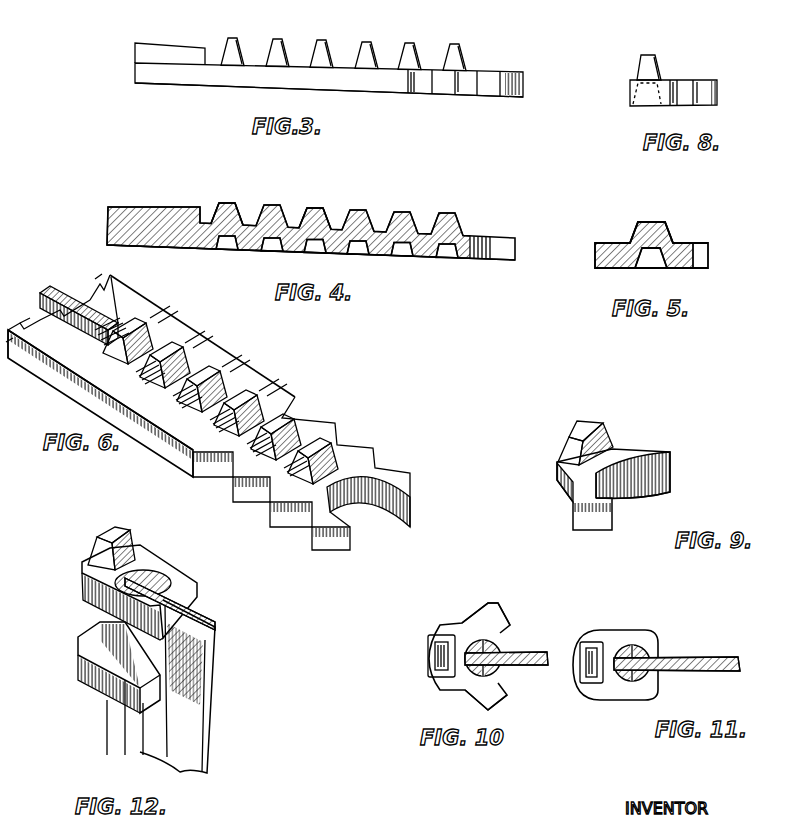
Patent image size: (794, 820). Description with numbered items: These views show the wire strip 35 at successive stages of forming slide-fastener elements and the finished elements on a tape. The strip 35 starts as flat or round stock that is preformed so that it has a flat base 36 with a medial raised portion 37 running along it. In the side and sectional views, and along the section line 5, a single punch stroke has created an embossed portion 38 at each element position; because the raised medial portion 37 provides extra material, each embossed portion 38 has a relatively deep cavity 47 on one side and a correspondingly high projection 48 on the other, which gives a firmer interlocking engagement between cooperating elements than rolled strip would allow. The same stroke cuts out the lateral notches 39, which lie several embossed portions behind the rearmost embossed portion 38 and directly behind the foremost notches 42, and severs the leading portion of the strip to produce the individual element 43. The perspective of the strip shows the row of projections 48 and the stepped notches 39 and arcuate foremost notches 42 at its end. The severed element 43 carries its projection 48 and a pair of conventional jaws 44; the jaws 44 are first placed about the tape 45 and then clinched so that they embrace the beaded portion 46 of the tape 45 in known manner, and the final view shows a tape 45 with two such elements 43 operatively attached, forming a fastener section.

In FIG. 4, the section line 5— 5 is at (402, 307).
In FIG. 3, the wire strip 35 is at (213, 56).
In FIG. 4, the wire strip 35 is at (140, 207).
In FIG. 6, the wire strip 35 is at (192, 327).
In FIG. 3, the flat base 36 is at (186, 84).
In FIG. 4, the flat base 36 is at (166, 247).
In FIG. 5, the flat base 36 is at (700, 269).
In FIG. 6, the flat base 36 is at (101, 368).
In FIG. 3, the medial raised portion 37 is at (170, 46).
In FIG. 6, the medial raised portion 37 is at (72, 293).
In FIG. 3, the embossed portion 38 is at (234, 37).
In FIG. 4, the embossed portion 38 is at (219, 203).
In FIG. 6, the notches 39 is at (337, 444).
In FIG. 6, the foremost notches 42 is at (380, 470).
In FIG. 8, the element 43 is at (689, 79).
In FIG. 9, the element 43 is at (626, 447).
In FIG. 10, the element 43 is at (440, 624).
In FIG. 11, the element 43 is at (615, 632).
In FIG. 12, the element 43 is at (155, 556).
In FIG. 9, the jaws 44 is at (670, 462).
In FIG. 10, the jaws 44 is at (498, 618).
In FIG. 10, the tape 45 is at (525, 652).
In FIG. 11, the tape 45 is at (692, 657).
In FIG. 12, the tape 45 is at (212, 655).
In FIG. 10, the beaded portion 46 is at (499, 672).
In FIG. 11, the beaded portion 46 is at (632, 682).
In FIG. 12, the beaded portion 46 is at (175, 580).
In FIG. 4, the cavities 47 is at (272, 246).
In FIG. 8, the cavities 47 is at (640, 104).
In FIG. 5, the cavities 47 is at (645, 262).
In FIG. 3, the projections 48 is at (278, 38).
In FIG. 4, the projections 48 is at (316, 208).
In FIG. 8, the projections 48 is at (639, 55).
In FIG. 5, the projections 48 is at (658, 222).
In FIG. 6, the projections 48 is at (215, 367).
In FIG. 9, the projections 48 is at (573, 421).
In FIG. 10, the projections 48 is at (434, 668).
In FIG. 11, the projections 48 is at (591, 662).
In FIG. 12, the projections 48 is at (103, 531).